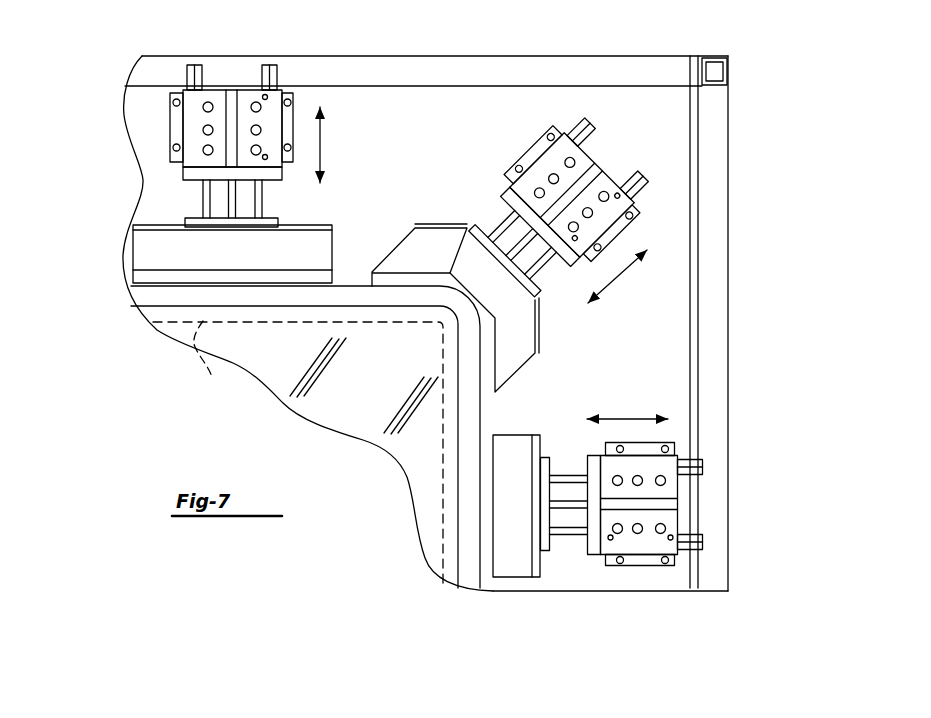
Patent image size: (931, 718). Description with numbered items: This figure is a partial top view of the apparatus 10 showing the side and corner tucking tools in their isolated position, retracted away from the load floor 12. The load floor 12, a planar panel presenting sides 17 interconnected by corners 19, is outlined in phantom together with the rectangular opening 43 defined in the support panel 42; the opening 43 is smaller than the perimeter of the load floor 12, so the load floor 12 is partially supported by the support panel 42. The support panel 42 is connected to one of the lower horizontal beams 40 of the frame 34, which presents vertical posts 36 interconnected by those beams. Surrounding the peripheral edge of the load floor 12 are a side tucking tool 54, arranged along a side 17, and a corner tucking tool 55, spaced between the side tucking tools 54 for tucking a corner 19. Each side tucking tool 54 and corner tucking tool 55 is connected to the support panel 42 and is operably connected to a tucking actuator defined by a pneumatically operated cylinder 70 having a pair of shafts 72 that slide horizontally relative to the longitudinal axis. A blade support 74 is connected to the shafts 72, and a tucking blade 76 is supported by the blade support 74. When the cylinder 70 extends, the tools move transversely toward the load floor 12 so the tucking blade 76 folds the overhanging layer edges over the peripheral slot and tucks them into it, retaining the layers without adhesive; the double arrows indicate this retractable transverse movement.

The apparatus 10 is at (822, 147).
The load floor 12 is at (367, 392).
The sides 17 is at (267, 307).
The corners 19 is at (443, 326).
The frame 34 is at (464, 300).
The vertical posts 36 is at (715, 68).
The lower horizontal beams 40 is at (510, 70).
The support panel 42 is at (363, 107).
The opening 43 is at (212, 379).
The side tucking tool 54 is at (266, 116).
The corner tucking tool 55 is at (574, 172).
The pneumatically operated cylinder 70 is at (416, 297).
The shafts 72 is at (203, 200).
The blade support 74 is at (413, 248).
The tucking blade 76 is at (165, 257).